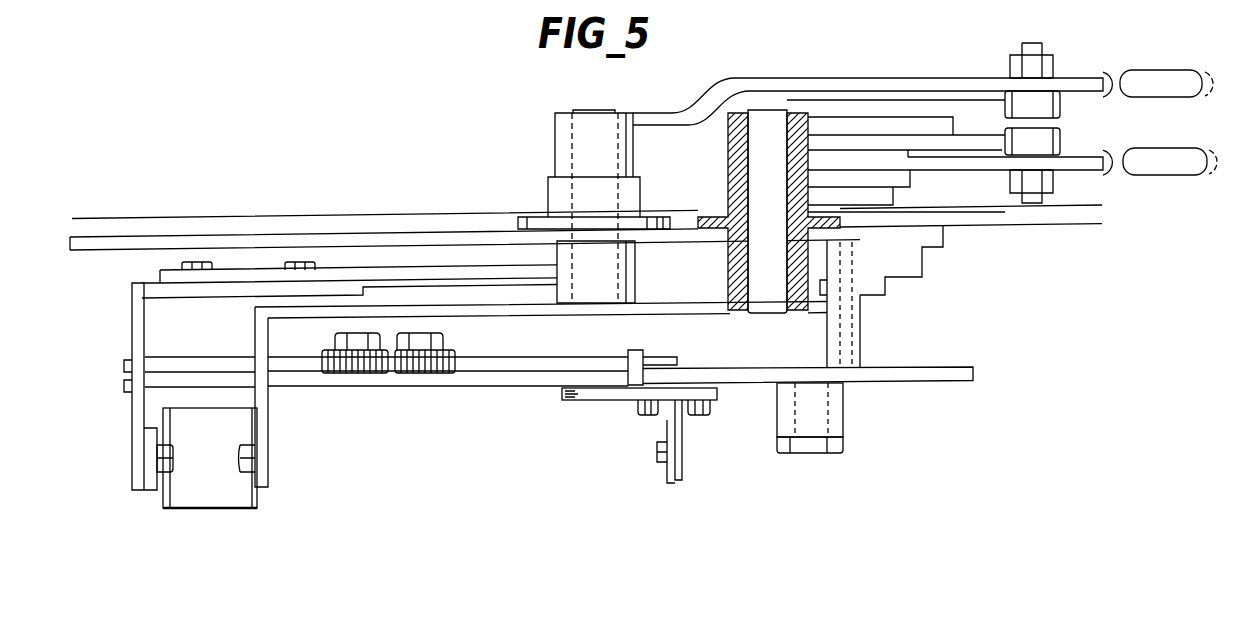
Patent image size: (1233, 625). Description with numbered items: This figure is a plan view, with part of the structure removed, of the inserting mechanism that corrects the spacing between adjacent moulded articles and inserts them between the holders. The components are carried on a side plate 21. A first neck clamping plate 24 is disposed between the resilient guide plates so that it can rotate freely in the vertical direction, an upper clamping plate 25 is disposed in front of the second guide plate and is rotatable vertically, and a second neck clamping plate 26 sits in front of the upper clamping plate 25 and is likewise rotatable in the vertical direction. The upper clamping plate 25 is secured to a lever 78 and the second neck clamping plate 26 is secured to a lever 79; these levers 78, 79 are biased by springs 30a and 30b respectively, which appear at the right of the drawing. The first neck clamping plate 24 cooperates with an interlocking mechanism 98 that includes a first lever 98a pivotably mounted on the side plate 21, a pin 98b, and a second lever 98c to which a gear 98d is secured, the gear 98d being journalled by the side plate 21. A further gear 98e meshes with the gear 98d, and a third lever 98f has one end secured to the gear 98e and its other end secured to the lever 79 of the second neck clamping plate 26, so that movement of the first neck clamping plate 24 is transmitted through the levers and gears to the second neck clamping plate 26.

The side plate 21 is at (932, 372).
The first neck clamping plate 24 is at (680, 472).
The upper clamping plate 25 is at (228, 497).
The second neck clamping plate 26 is at (153, 457).
The spring 30a is at (1152, 167).
The spring 30b is at (1152, 93).
The lever 78 is at (263, 458).
The lever 79 is at (140, 432).
The interlocking mechanism 98 is at (521, 378).
The first lever 98a is at (585, 397).
The pin 98b is at (637, 357).
The second lever 98c is at (525, 357).
The gear 98d is at (440, 373).
The gear 98e is at (358, 373).
The third lever 98f is at (178, 363).